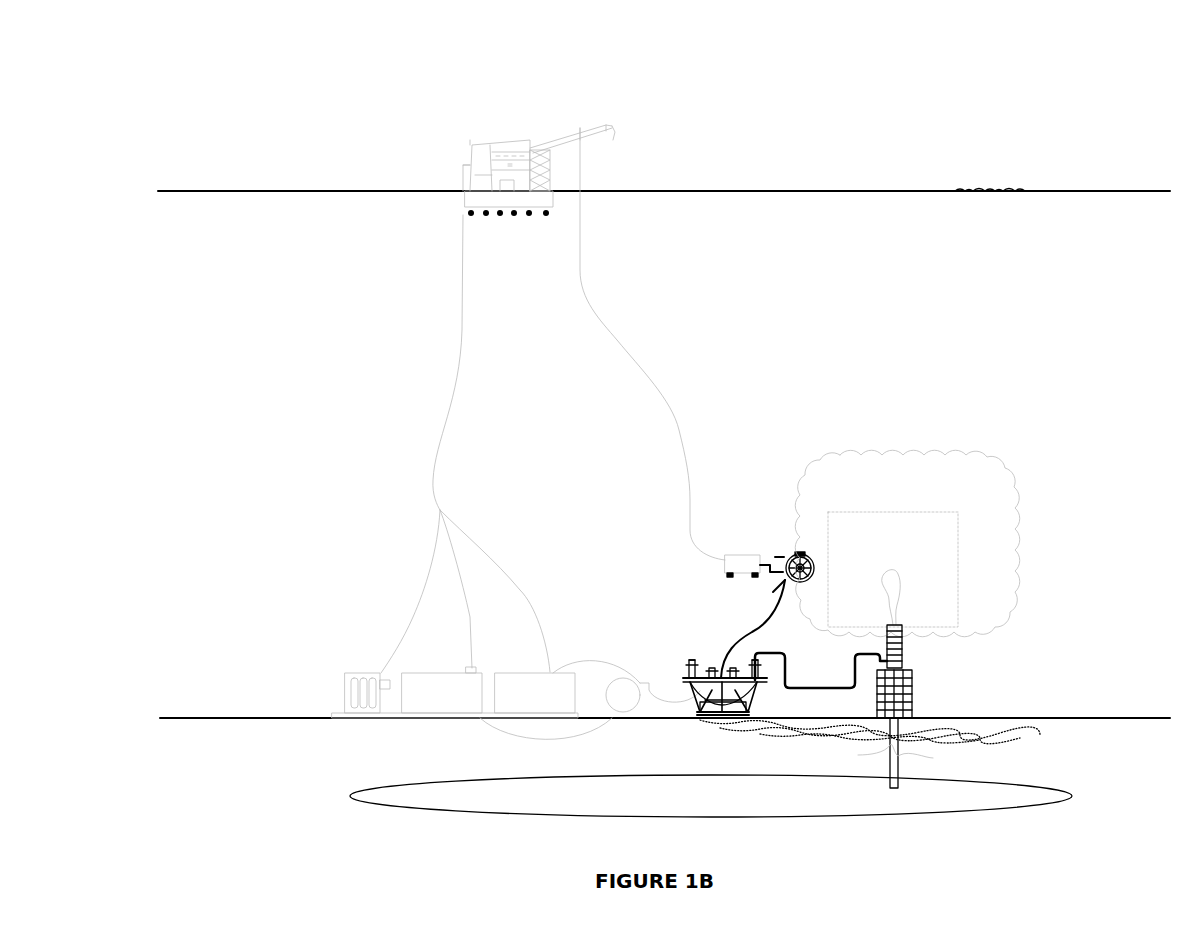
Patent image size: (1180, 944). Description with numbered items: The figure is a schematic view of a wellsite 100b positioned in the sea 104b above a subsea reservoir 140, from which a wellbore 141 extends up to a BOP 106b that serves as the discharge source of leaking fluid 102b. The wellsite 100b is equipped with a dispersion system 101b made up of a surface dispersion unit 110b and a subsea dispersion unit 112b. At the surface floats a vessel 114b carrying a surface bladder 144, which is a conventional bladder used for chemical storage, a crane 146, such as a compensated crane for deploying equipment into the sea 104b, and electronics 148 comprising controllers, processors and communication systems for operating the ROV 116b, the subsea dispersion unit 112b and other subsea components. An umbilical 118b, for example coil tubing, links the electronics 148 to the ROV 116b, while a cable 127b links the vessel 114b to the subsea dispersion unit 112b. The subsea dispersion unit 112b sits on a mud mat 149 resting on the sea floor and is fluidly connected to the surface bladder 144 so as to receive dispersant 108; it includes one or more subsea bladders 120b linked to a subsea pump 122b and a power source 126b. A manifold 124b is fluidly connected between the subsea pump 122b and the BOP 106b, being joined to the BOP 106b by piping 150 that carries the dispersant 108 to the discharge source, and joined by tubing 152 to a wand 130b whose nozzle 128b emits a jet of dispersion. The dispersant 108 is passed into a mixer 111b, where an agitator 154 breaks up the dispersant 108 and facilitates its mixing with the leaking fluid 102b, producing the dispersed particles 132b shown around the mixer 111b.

The wellsite 100b is at (817, 82).
The dispersion system 101b is at (896, 168).
The sea 104b is at (185, 246).
The surface dispersion unit 110b is at (265, 128).
The subsea dispersion unit 112b is at (230, 528).
The vessel 114b is at (479, 147).
The surface bladder 144 is at (474, 174).
The crane 146 is at (620, 101).
The electronics 148 is at (509, 155).
The umbilical 118b is at (622, 344).
The cable 127b is at (452, 392).
The ROV 116b is at (724, 560).
The nozzle 128b is at (768, 557).
The dispersant 108 is at (775, 557).
The wand 130b is at (768, 566).
The agitator 154 is at (802, 555).
The particles 132b is at (943, 456).
The mixer 111b is at (950, 536).
The leaking fluid 102b is at (900, 590).
The BOP 106b is at (912, 680).
The wellbore 141 is at (898, 735).
The subsea reservoir 140 is at (1017, 803).
The piping 150 is at (815, 690).
The tubing 152 is at (722, 648).
The manifold 124b is at (704, 712).
The subsea pump 122b is at (630, 700).
The subsea bladder 120b is at (516, 695).
The power source 126b is at (350, 675).
The mud mat 149 is at (383, 719).